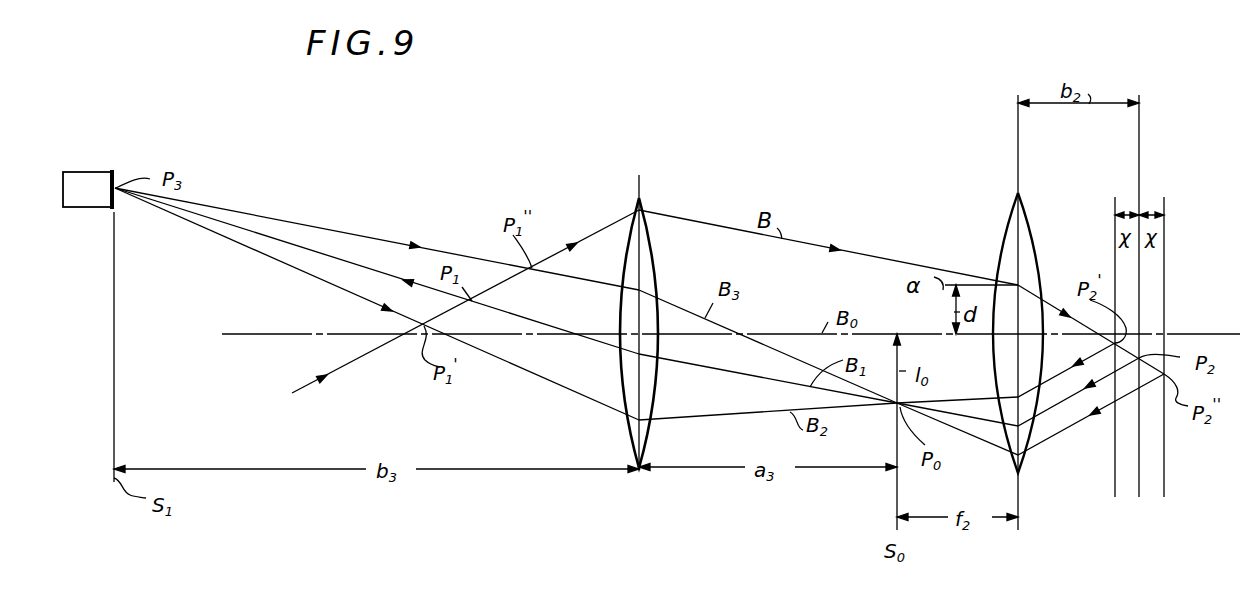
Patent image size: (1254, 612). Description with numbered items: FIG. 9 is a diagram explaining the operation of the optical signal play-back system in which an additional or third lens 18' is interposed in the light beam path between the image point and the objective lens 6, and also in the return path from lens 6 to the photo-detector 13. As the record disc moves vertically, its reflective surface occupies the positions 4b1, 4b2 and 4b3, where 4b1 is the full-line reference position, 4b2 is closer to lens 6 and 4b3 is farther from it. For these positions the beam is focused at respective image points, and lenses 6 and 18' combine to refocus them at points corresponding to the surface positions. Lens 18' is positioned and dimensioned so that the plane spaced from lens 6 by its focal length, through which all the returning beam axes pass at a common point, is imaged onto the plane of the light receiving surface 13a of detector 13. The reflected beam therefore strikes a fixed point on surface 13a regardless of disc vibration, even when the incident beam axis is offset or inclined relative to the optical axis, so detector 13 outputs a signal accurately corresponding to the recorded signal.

The photo-detector 13 is at (85, 182).
The light receiving surface 13a is at (114, 174).
The additional lens 18' is at (671, 322).
The lens 6 is at (1013, 217).
The reference position of surface 4b 4b1 is at (1142, 155).
The displaced position of surface 4b toward lens 4b2 is at (1091, 347).
The displaced position of surface 4b away from lens 4b3 is at (1167, 207).